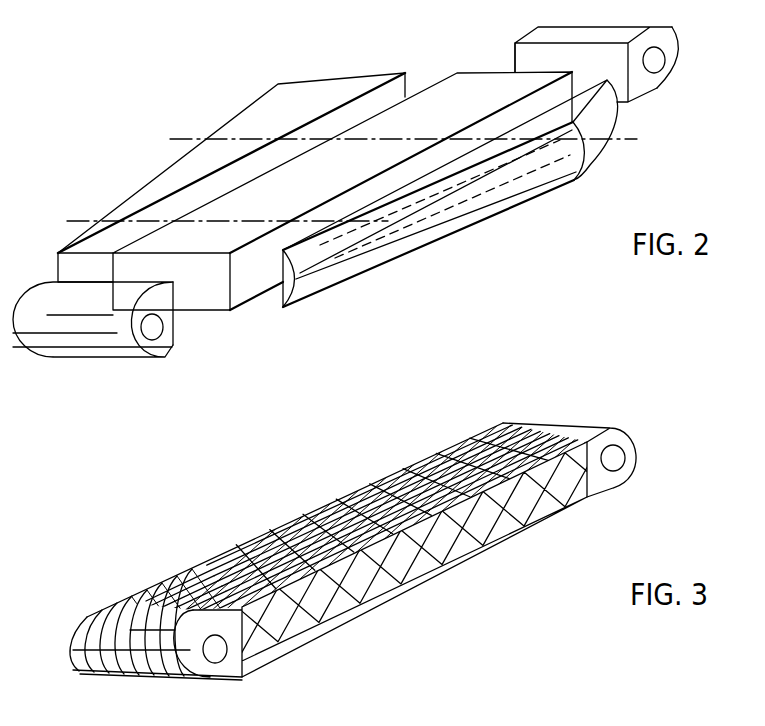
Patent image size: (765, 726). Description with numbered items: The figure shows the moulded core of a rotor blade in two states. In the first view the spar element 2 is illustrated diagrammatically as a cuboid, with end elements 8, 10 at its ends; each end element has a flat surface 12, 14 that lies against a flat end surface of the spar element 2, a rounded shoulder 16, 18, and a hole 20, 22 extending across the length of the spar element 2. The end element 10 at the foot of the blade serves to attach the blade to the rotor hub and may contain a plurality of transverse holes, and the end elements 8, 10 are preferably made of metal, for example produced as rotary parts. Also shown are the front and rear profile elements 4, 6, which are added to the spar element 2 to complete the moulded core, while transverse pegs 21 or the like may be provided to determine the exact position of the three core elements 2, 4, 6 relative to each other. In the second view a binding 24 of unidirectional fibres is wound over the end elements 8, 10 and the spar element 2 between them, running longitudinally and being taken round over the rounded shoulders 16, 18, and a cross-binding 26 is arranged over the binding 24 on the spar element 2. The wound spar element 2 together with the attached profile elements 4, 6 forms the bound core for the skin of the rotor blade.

In FIG. 2, the spar element 2 is at (455, 90).
In FIG. 3, the spar element 2 is at (365, 481).
In FIG. 2, the front profile element 4 is at (527, 200).
In FIG. 2, the rear profile element 6 is at (258, 113).
In FIG. 2, the end element 8 is at (597, 78).
In FIG. 3, the end element 8 is at (589, 487).
In FIG. 2, the end element 10 is at (122, 353).
In FIG. 3, the end element 10 is at (136, 647).
In FIG. 2, the flat surface 12 is at (537, 57).
In FIG. 2, the flat surface 14 is at (181, 320).
In FIG. 2, the rounded shoulder 16 is at (673, 60).
In FIG. 3, the rounded shoulder 16 is at (636, 462).
In FIG. 2, the rounded shoulder 18 is at (57, 350).
In FIG. 3, the rounded shoulder 18 is at (170, 677).
In FIG. 2, the hole 20 is at (657, 55).
In FIG. 2, the transverse pegs 21 is at (190, 140).
In FIG. 2, the hole 22 is at (152, 335).
In FIG. 3, the binding 24 is at (560, 428).
In FIG. 3, the cross-binding 26 is at (425, 578).